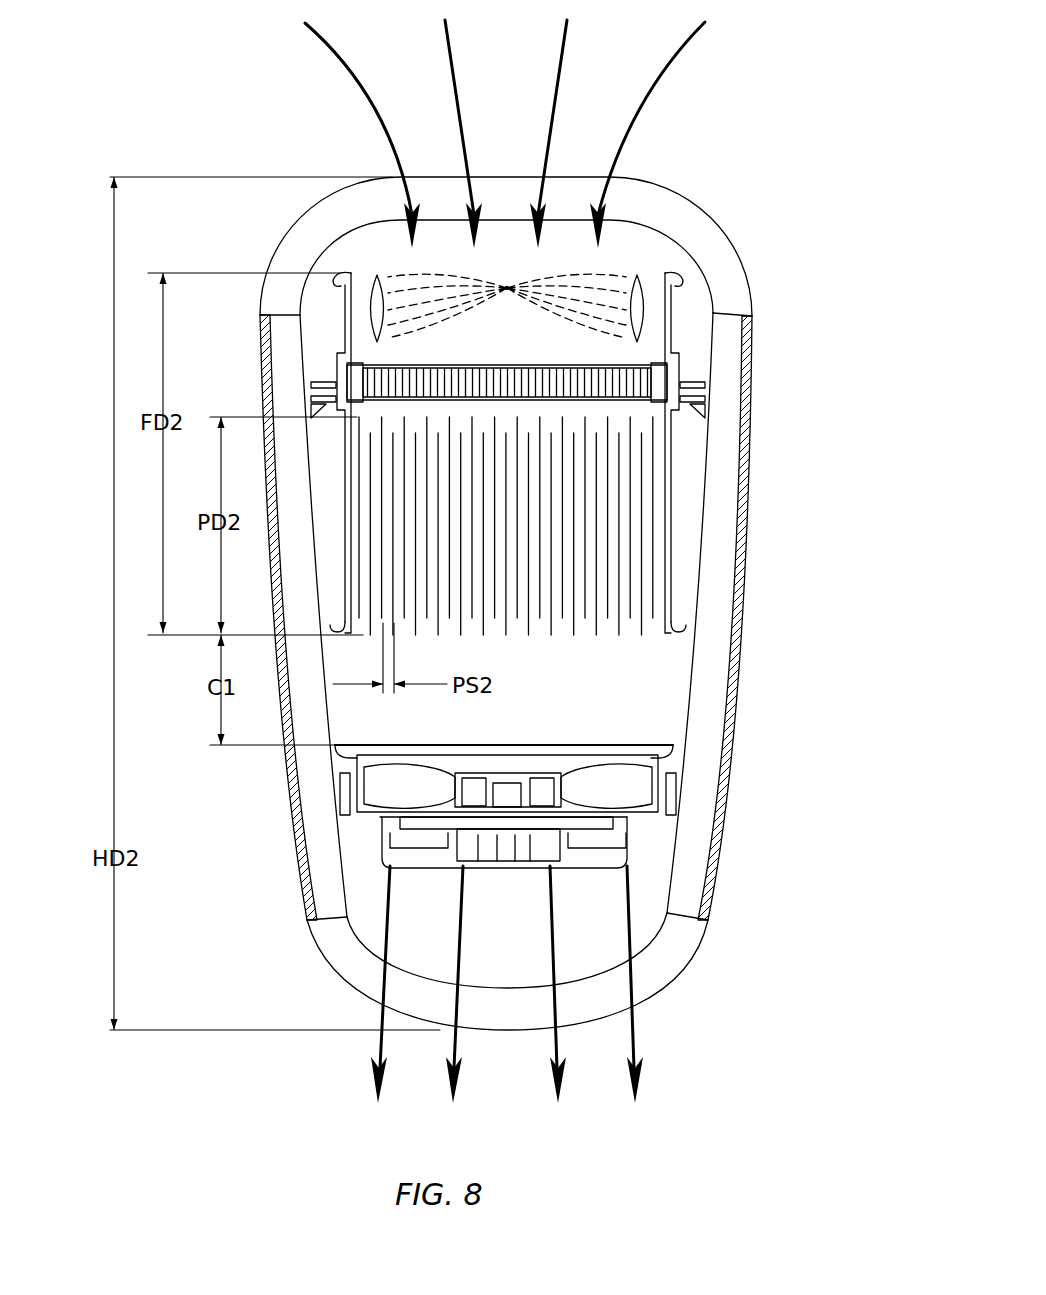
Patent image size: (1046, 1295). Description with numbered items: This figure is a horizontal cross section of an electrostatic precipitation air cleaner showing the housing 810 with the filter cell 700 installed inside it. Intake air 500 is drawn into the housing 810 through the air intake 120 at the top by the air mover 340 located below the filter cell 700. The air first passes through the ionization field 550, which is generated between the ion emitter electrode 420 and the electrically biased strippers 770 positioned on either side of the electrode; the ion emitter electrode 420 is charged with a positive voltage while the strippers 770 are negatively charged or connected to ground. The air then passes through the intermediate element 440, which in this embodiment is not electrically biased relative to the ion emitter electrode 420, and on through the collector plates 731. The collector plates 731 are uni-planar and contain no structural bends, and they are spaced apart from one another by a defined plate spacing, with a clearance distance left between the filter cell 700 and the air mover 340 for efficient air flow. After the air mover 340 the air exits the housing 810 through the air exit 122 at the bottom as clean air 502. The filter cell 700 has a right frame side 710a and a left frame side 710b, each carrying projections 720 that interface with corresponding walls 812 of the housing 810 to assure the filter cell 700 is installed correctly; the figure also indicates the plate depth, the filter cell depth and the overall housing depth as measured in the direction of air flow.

The filter cell 700 is at (474, 481).
The intake air 500 is at (360, 82).
The ion emitter electrode 420 is at (507, 288).
The electrically biased strippers 770 is at (645, 275).
The air intake 120 is at (688, 218).
The left frame side 710b is at (337, 277).
The right frame side 710a is at (684, 280).
The intermediate element 440 is at (620, 367).
The projections 720 is at (688, 392).
The walls 812 is at (690, 406).
The housing 810 is at (741, 656).
The ionization field 550 is at (550, 328).
The collector plates 731 is at (530, 633).
The air mover 340 is at (642, 806).
The air exit 122 is at (659, 970).
The clean air 502 is at (385, 1042).